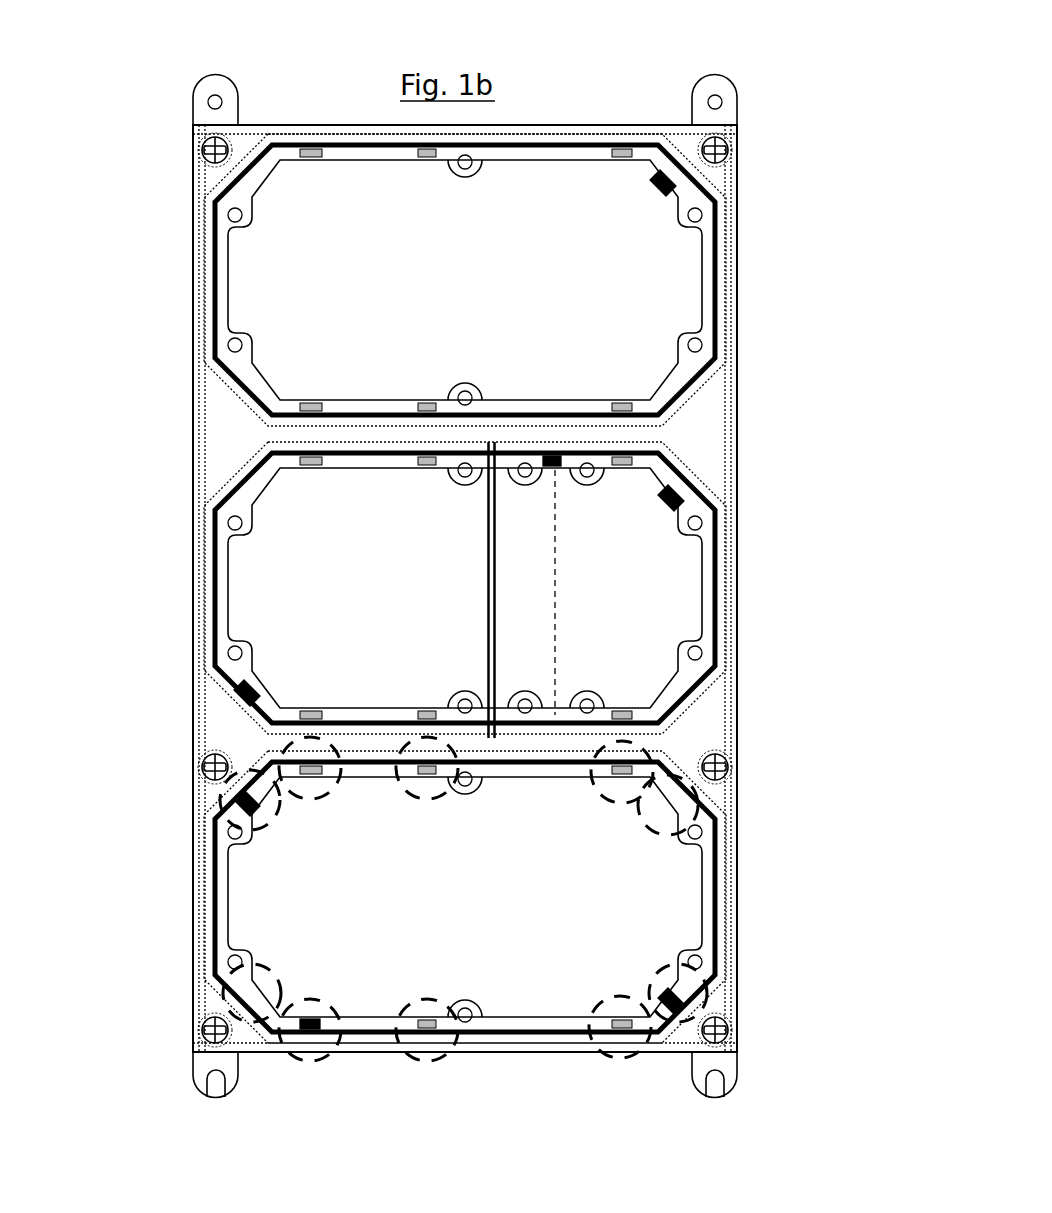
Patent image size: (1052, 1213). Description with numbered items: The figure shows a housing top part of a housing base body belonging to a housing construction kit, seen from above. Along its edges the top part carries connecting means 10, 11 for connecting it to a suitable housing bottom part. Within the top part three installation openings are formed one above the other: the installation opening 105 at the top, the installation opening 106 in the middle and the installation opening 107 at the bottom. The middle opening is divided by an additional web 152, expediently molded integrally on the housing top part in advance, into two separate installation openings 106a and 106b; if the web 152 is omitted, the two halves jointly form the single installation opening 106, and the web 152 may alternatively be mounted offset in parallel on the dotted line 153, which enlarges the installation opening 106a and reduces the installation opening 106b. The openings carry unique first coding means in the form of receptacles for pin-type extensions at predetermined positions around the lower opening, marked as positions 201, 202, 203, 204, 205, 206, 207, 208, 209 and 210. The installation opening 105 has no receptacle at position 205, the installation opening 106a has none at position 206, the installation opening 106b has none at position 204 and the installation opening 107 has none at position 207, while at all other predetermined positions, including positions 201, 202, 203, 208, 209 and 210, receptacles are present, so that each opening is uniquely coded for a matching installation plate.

The connecting means 10 is at (191, 64).
The connecting means 11 is at (237, 132).
The installation opening 105 is at (465, 280).
The installation opening 106 is at (465, 588).
The installation opening 106a is at (355, 588).
The installation opening 106b is at (583, 587).
The installation opening 107 is at (465, 897).
The web 152 is at (476, 568).
The dotted line 153 is at (569, 540).
The predetermined position 201 is at (267, 819).
The predetermined position 202 is at (314, 785).
The predetermined position 203 is at (423, 788).
The predetermined position 204 is at (605, 787).
The predetermined position 205 is at (654, 824).
The predetermined position 206 is at (268, 982).
The predetermined position 207 is at (318, 1019).
The predetermined position 208 is at (426, 1018).
The predetermined position 209 is at (611, 1016).
The predetermined position 210 is at (661, 982).